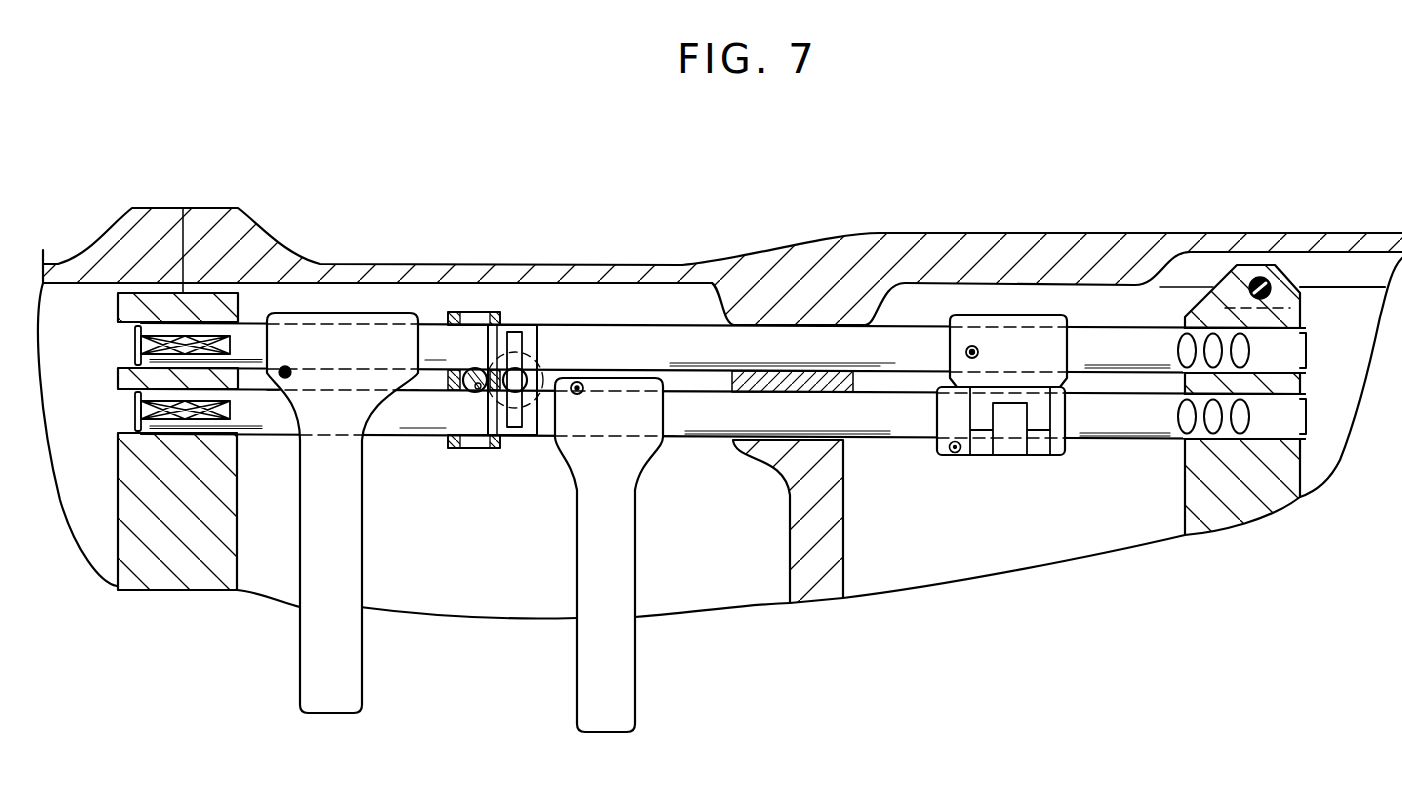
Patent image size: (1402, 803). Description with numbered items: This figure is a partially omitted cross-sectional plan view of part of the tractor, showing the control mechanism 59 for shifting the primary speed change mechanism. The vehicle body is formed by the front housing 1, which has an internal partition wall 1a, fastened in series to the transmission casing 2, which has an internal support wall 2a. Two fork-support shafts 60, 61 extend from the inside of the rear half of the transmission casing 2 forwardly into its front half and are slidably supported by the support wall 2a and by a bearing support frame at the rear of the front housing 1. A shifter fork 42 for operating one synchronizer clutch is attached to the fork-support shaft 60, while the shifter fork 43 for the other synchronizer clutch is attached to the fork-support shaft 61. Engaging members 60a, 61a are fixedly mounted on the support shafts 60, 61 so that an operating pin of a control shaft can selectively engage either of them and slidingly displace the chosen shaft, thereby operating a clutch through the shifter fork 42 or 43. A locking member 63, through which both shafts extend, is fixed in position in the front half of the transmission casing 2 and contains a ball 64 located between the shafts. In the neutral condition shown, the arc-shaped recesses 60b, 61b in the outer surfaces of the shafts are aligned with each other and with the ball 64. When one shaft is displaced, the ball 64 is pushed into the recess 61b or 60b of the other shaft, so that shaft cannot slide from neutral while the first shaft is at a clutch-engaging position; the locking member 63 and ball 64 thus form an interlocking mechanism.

The front housing 1 is at (88, 256).
The internal partition wall 1a is at (188, 545).
The transmission casing 2 is at (985, 251).
The internal support wall 2a is at (828, 565).
The shifter fork 42 is at (340, 668).
The shifter fork 43 is at (620, 677).
The control mechanism 59 is at (666, 313).
The fork-support shaft 60 is at (908, 343).
The engaging member 60a is at (1038, 318).
The arc-shaped recess 60b is at (490, 372).
The fork-support shaft 61 is at (717, 417).
The engaging member 61a is at (937, 446).
The arc-shaped recess 61b is at (478, 388).
The locking member 63 is at (452, 448).
The ball 64 is at (445, 358).